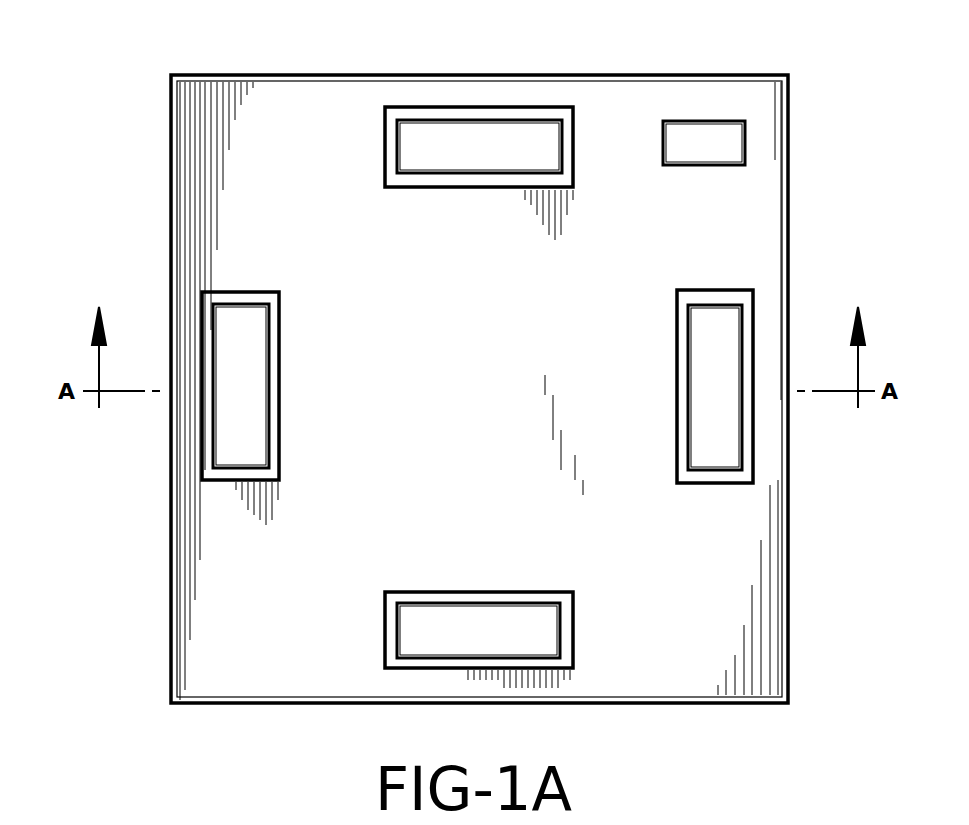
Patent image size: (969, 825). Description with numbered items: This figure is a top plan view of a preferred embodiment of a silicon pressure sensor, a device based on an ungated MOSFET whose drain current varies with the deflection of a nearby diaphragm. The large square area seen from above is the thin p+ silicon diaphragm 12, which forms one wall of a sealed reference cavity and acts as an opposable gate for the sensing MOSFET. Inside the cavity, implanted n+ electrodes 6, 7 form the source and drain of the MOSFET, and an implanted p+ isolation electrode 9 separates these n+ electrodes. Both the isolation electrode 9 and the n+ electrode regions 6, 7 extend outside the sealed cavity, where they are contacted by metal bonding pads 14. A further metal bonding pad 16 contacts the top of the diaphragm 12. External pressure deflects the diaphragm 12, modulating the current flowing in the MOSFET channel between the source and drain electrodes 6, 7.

The p+ silicon diaphragm 12 is at (272, 148).
The isolation electrode 9 is at (410, 115).
The metal bonding pad 14 is at (520, 137).
The metal bonding pad 16 is at (708, 133).
The n+ electrode 7 is at (207, 332).
The n+ electrode 6 is at (747, 438).